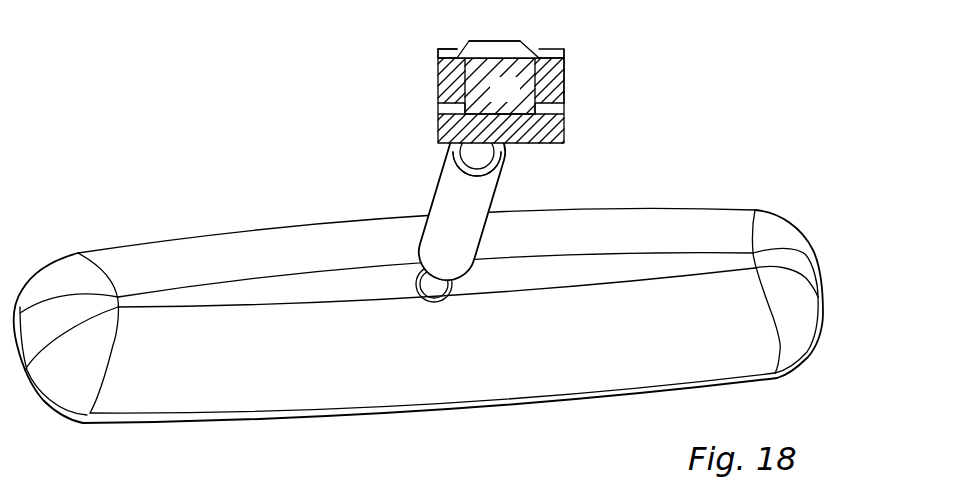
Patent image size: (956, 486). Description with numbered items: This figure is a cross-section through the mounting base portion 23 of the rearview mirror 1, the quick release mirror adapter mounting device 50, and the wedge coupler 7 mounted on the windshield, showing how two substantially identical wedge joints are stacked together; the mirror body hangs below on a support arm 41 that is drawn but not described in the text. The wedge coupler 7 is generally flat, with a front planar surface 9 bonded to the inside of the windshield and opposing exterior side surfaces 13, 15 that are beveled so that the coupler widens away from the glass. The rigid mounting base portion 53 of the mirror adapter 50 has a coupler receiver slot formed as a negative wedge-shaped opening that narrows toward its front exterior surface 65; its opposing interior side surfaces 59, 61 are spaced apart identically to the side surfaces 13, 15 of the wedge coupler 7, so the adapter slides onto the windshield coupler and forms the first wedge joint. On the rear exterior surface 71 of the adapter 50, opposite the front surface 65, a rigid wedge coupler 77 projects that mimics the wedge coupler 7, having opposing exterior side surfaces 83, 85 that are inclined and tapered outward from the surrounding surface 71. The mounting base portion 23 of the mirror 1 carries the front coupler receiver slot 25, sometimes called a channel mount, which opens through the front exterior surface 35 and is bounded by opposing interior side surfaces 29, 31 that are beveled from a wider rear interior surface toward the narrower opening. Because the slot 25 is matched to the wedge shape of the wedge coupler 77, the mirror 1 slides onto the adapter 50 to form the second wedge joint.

The rearview mirror 1 is at (177, 425).
The wedge coupler 7 is at (489, 34).
The front planar surface 9 is at (502, 43).
The exterior side surface 13 is at (405, 55).
The interior side surface 59 is at (450, 53).
The exterior side surface 15 is at (599, 50).
The interior side surface 61 is at (533, 48).
The mounting base portion 23 is at (508, 97).
The front coupler receiver slot 25 is at (500, 107).
The interior side surface 29 is at (408, 110).
The exterior side surface 83 is at (465, 108).
The interior side surface 31 is at (600, 108).
The exterior side surface 85 is at (535, 107).
The front exterior surface 35 is at (602, 80).
The rear exterior surface 71 is at (564, 83).
The support arm 41 is at (480, 207).
The quick release mirror adapter mounting device 50 is at (438, 77).
The rigid mounting base portion 53 is at (517, 100).
The front exterior surface 65 is at (450, 50).
The wedge coupler 77 is at (507, 113).